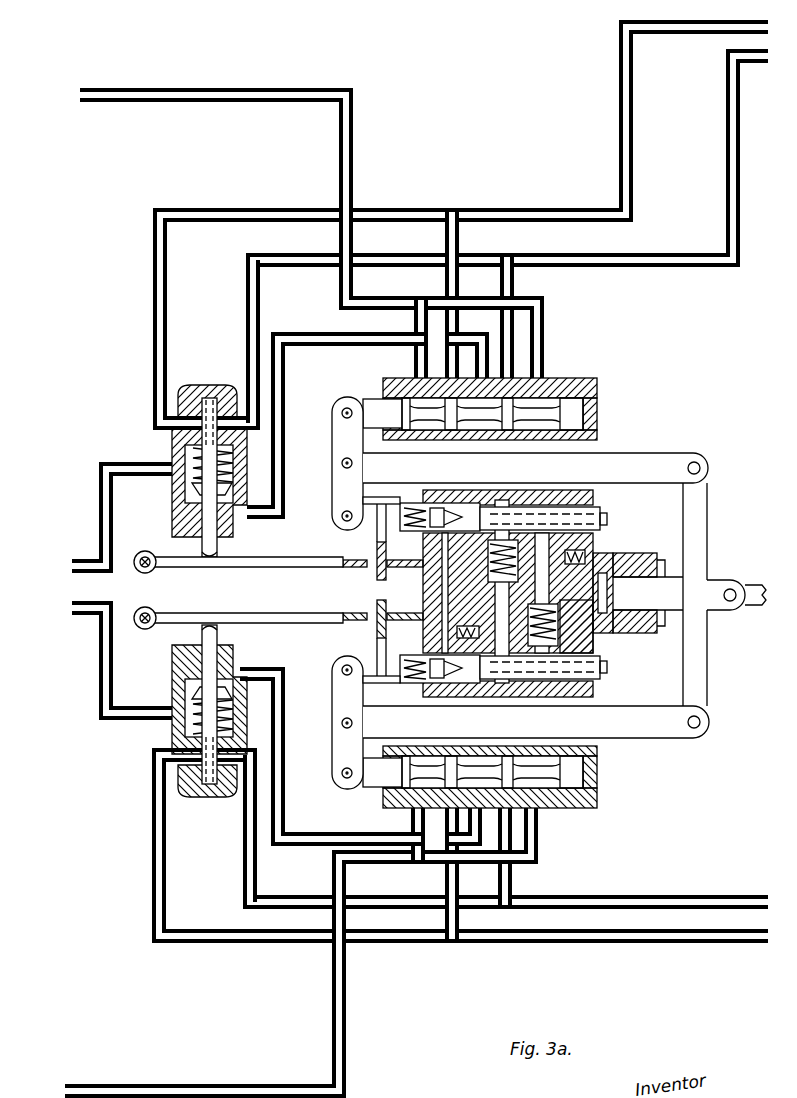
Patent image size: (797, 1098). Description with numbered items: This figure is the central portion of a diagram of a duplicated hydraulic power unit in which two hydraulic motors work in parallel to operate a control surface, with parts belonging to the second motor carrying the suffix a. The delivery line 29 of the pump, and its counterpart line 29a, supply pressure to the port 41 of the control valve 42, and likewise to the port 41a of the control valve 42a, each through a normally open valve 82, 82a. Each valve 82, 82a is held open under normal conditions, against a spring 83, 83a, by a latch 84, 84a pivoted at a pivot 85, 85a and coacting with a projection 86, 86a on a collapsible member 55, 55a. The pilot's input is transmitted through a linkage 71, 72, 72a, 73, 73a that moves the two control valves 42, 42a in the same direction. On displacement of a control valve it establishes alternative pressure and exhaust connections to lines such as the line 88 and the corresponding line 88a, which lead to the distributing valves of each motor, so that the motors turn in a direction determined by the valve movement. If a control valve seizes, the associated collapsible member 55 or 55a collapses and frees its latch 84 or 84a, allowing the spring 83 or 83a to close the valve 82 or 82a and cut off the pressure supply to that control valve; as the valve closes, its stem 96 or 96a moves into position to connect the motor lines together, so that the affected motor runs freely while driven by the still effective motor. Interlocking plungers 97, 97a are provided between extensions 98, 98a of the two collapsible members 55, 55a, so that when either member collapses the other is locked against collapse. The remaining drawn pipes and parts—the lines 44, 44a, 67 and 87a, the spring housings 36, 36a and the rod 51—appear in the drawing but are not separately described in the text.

The supply pipe 44 is at (97, 88).
The supply pipe 44a is at (110, 1086).
The pipe 67 is at (166, 305).
The pipe 87a is at (160, 860).
The line 88 is at (247, 323).
The pipe 88a is at (241, 889).
The delivery line 29 is at (78, 561).
The pipe 29a is at (80, 620).
The port 41 is at (483, 388).
The valve casing 41a is at (483, 800).
The control valve 42 is at (582, 410).
The control valve 42a is at (572, 776).
The linkage member 73 is at (332, 440).
The linkage member 73a is at (340, 750).
The linkage member 72 is at (625, 453).
The linkage member 72a is at (645, 733).
The linkage member 71 is at (703, 540).
The piston rod 51 is at (605, 572).
The interlocking plunger 97 is at (495, 590).
The interlocking plunger 97a is at (593, 647).
The extension 98 is at (600, 505).
The extension 98a is at (600, 684).
The spring 83 is at (172, 452).
The spring 83a is at (172, 727).
The spring 36 is at (185, 470).
The spring 36a is at (182, 710).
The normally open valve 82 is at (192, 493).
The normally open valve 82a is at (190, 683).
The stem 96 is at (210, 398).
The stem 96a is at (211, 795).
The latch 84 is at (262, 565).
The latch 84a is at (248, 612).
The pivot 85 is at (144, 551).
The pivot 85a is at (150, 609).
The projection 86 is at (377, 572).
The projection 86a is at (377, 612).
The collapsible member 55 is at (374, 530).
The collapsible member 55a is at (372, 660).